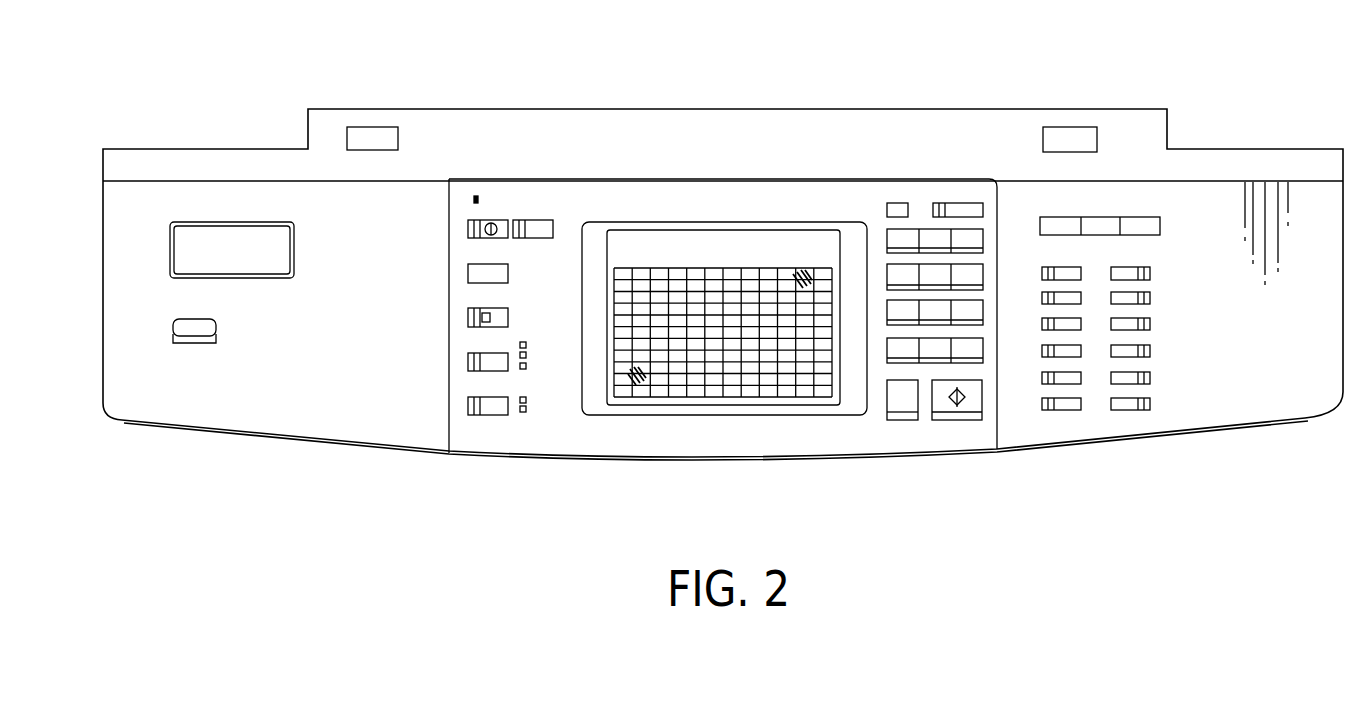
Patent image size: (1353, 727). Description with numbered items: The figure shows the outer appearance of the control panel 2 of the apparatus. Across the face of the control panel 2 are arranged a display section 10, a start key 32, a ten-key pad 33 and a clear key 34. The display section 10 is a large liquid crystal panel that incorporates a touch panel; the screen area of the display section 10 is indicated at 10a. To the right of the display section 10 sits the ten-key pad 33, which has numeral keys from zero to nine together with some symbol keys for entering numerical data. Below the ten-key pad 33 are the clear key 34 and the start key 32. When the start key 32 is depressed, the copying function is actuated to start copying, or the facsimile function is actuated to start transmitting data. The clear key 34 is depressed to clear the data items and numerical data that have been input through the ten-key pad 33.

The control panel 2 is at (723, 271).
The display section 10 is at (724, 323).
The display screen area 10a is at (733, 388).
The start key 32 is at (966, 420).
The ten-key pad 33 is at (988, 295).
The clear key 34 is at (901, 420).